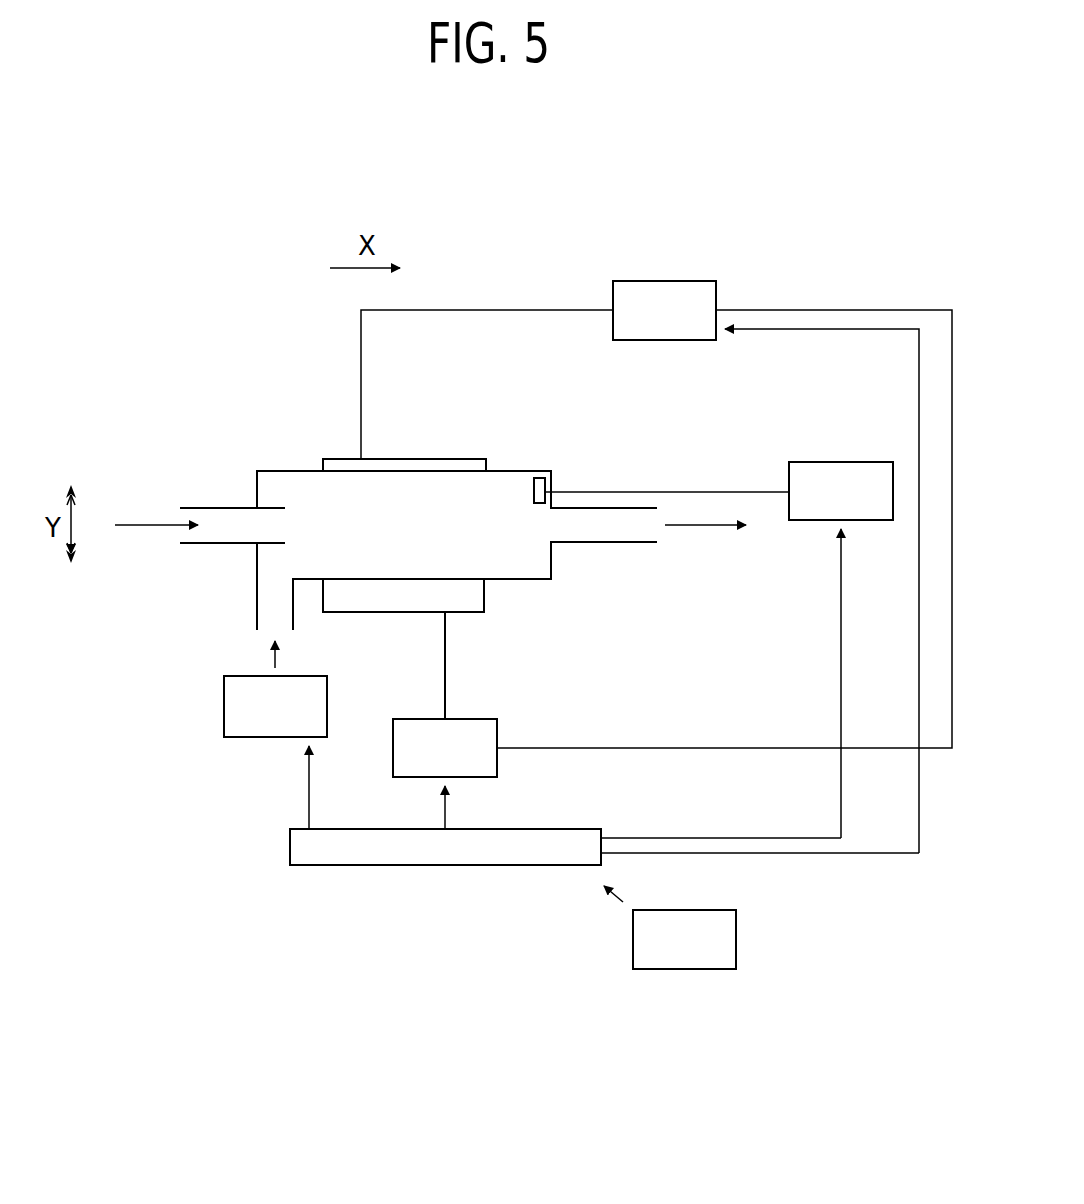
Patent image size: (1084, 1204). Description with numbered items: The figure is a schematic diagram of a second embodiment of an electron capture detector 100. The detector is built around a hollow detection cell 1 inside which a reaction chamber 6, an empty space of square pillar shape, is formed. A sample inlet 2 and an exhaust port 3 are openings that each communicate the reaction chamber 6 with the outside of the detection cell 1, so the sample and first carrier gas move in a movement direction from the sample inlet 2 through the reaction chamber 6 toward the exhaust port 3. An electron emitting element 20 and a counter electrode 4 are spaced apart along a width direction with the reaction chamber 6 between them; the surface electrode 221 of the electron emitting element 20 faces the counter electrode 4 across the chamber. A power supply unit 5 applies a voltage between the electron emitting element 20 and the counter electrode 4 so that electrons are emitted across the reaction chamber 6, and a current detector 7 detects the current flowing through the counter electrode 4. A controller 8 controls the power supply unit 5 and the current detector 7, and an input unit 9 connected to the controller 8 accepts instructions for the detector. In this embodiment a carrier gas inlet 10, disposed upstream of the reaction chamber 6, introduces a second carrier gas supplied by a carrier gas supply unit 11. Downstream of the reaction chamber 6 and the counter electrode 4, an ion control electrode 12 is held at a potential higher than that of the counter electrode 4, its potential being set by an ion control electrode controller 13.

The electron capture detector 100 is at (200, 430).
The detection cell 1 is at (281, 470).
The sample inlet 2 is at (175, 510).
The exhaust port 3 is at (640, 530).
The counter electrode 4 is at (340, 458).
The power supply unit 5 is at (470, 719).
The reaction chamber 6 is at (507, 492).
The current detector 7 is at (693, 281).
The controller 8 is at (390, 866).
The input unit 9 is at (660, 969).
The carrier gas inlet 10 is at (265, 630).
The carrier gas supply unit 11 is at (224, 697).
The ion control electrode 12 is at (542, 477).
The ion control electrode controller 13 is at (863, 462).
The electron emitting element 20 is at (385, 612).
The surface electrode 221 is at (466, 579).